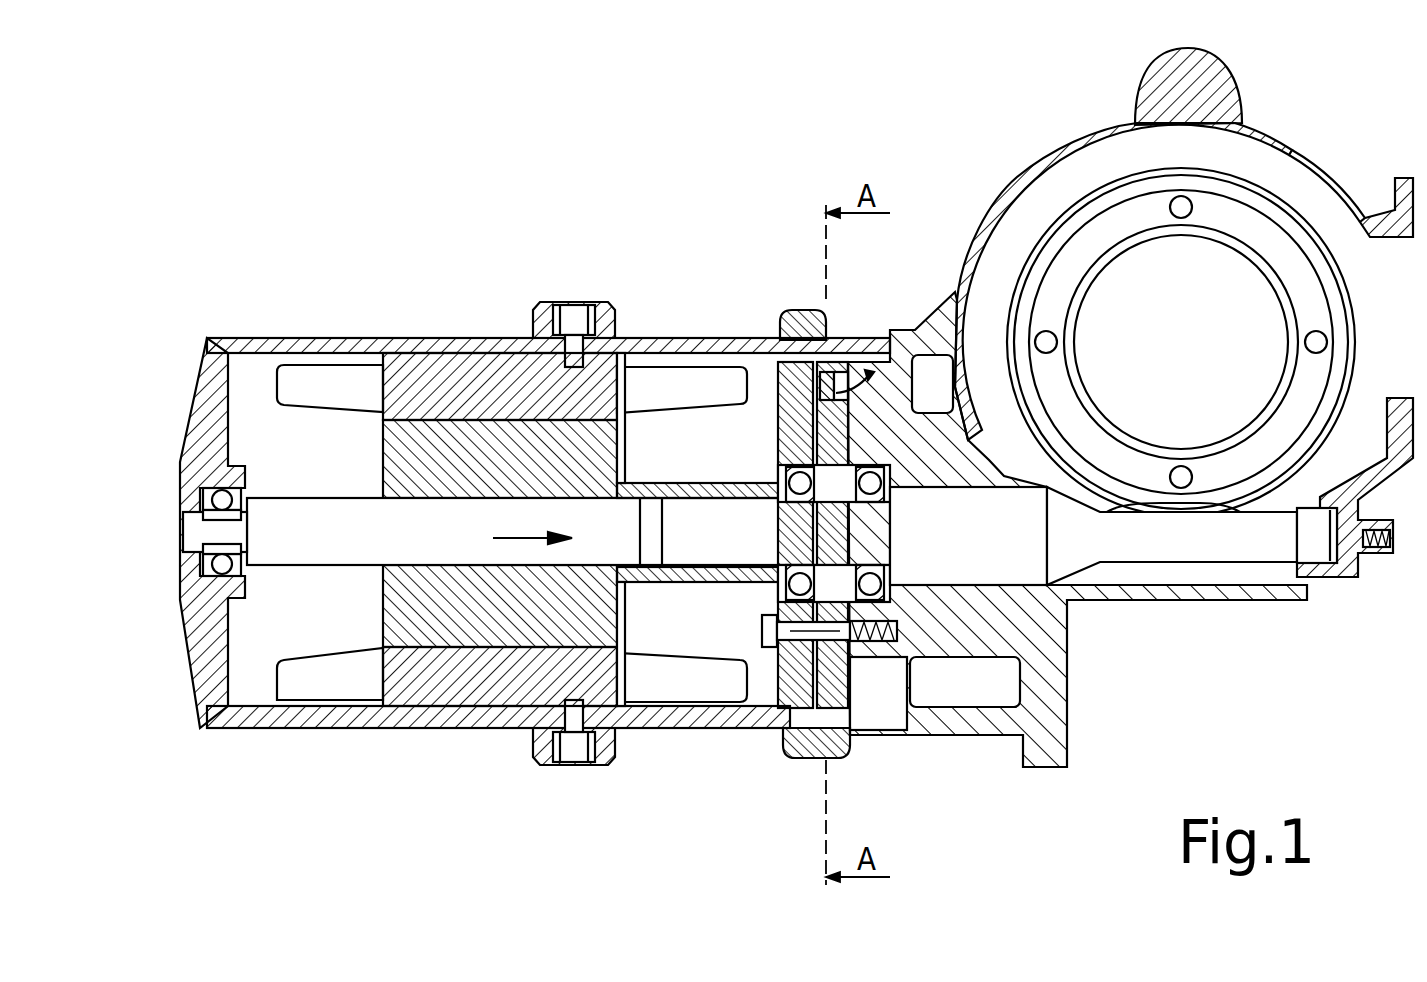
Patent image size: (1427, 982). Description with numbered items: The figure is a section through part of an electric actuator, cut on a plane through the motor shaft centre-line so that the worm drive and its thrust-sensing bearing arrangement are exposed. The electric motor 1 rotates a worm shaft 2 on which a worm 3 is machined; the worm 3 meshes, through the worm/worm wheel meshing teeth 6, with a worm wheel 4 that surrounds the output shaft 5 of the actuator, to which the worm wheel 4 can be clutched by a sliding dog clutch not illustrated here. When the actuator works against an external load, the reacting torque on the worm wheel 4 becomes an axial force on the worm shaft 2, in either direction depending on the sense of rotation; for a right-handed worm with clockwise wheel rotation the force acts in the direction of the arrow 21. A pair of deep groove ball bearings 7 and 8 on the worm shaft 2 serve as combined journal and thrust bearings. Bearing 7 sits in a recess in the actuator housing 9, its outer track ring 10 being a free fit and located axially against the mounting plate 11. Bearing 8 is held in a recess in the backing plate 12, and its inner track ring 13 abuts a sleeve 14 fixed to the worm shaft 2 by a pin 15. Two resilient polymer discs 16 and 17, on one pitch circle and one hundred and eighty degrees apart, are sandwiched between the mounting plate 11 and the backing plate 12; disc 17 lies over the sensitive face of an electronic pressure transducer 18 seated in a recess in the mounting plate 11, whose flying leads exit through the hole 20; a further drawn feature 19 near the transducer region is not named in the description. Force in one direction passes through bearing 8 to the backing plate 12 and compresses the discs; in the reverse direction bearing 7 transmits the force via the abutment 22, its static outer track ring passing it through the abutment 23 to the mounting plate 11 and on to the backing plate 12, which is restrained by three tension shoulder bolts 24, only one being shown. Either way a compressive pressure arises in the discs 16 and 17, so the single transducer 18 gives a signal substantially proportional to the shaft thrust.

The electric motor 1 is at (500, 410).
The worm shaft 2 is at (445, 518).
The worm 3 is at (1158, 564).
The worm wheel 4 is at (1085, 238).
The output shaft 5 is at (1148, 225).
The worm/worm wheel meshing teeth 6 is at (1180, 510).
The deep groove ball bearing 7 is at (912, 622).
The deep groove ball bearing 8 is at (812, 575).
The actuator housing 9 is at (1030, 632).
The outer track ring 10 is at (872, 642).
The mounting plate 11 is at (838, 655).
The backing plate 12 is at (790, 683).
The inner track ring 13 is at (792, 572).
The sleeve 14 is at (730, 580).
The pin 15 is at (657, 568).
The resilient polymer disc 16 is at (820, 726).
The resilient polymer disc 17 is at (810, 372).
The electronic pressure transducer 18 is at (824, 368).
The rotation arrow 19 is at (868, 375).
The hole 20 is at (846, 380).
The arrow 21 is at (540, 545).
The abutment 22 is at (892, 572).
The abutment 23 is at (840, 450).
The tension shoulder bolt 24 is at (758, 628).